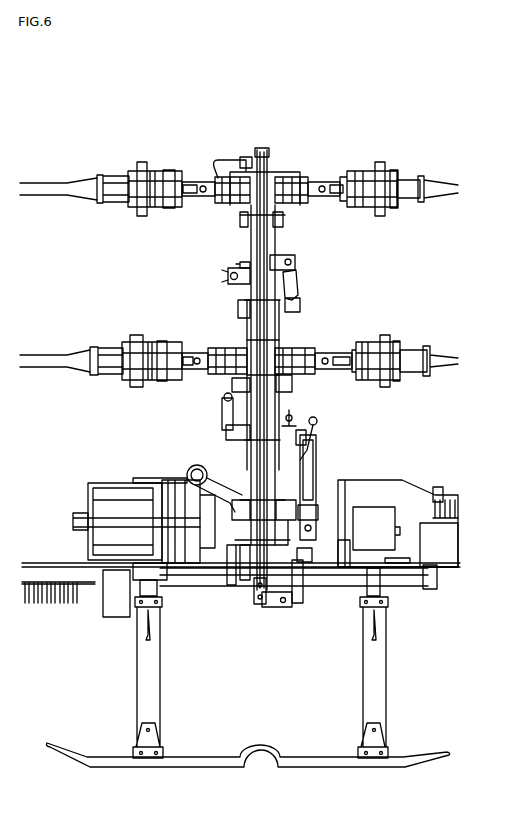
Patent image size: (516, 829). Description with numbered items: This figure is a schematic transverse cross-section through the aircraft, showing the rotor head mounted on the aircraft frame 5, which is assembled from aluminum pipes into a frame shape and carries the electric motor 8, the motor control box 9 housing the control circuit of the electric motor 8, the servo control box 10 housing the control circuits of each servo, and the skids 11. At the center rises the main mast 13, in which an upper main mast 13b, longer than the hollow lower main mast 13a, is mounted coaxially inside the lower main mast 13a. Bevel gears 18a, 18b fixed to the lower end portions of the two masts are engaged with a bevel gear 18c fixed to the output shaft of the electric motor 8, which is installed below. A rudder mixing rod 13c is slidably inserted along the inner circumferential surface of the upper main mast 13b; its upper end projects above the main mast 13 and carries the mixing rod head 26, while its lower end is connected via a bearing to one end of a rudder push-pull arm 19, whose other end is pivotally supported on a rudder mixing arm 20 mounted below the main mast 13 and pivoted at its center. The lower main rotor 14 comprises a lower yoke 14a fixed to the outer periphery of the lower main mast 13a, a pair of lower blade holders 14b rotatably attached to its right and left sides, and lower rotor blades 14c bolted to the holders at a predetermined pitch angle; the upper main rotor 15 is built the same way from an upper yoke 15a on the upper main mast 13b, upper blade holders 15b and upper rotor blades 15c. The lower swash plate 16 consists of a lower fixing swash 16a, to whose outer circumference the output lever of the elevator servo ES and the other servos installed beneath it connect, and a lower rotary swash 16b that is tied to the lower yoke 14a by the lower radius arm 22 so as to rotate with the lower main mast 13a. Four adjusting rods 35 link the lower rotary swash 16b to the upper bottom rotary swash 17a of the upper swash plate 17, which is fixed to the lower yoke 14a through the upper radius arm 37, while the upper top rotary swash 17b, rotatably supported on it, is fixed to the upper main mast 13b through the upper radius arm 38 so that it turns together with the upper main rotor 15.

The aircraft frame 5 is at (405, 586).
The electric motor 8 is at (108, 484).
The motor control box 9 is at (38, 562).
The servo control box 10 is at (410, 482).
The skids 11 is at (383, 651).
The main mast 13 is at (276, 328).
The lower main mast 13a is at (236, 384).
The upper main mast 13b is at (246, 308).
The rudder mixing rod 13c is at (263, 155).
The lower main rotor 14 is at (364, 335).
The lower yoke 14a is at (218, 343).
The lower blade holders 14b is at (175, 342).
The lower rotor blades 14c is at (73, 356).
The upper main rotor 15 is at (366, 154).
The upper yoke 15a is at (296, 203).
The upper blade holders 15b is at (178, 172).
The upper rotor blades 15c is at (77, 184).
The lower swash plate 16 is at (334, 423).
The lower fixing swash 16a is at (316, 424).
The lower rotary swash 16b is at (292, 421).
The upper swash plate 17 is at (205, 268).
The upper bottom rotary swash 17a is at (226, 277).
The upper top rotary swash 17b is at (234, 266).
The bevel gear 18a is at (246, 580).
The bevel gear 18b is at (222, 470).
The bevel gear 18c is at (233, 572).
The rudder push-pull arm 19 is at (257, 604).
The rudder mixing arm 20 is at (286, 607).
The lower radius arm 22 is at (226, 405).
The mixing rod head 26 is at (254, 158).
The adjusting rods 35 is at (286, 381).
The upper radius arm 37 is at (300, 296).
The upper radius arm 38 is at (284, 258).
The elevator servo ES is at (316, 471).